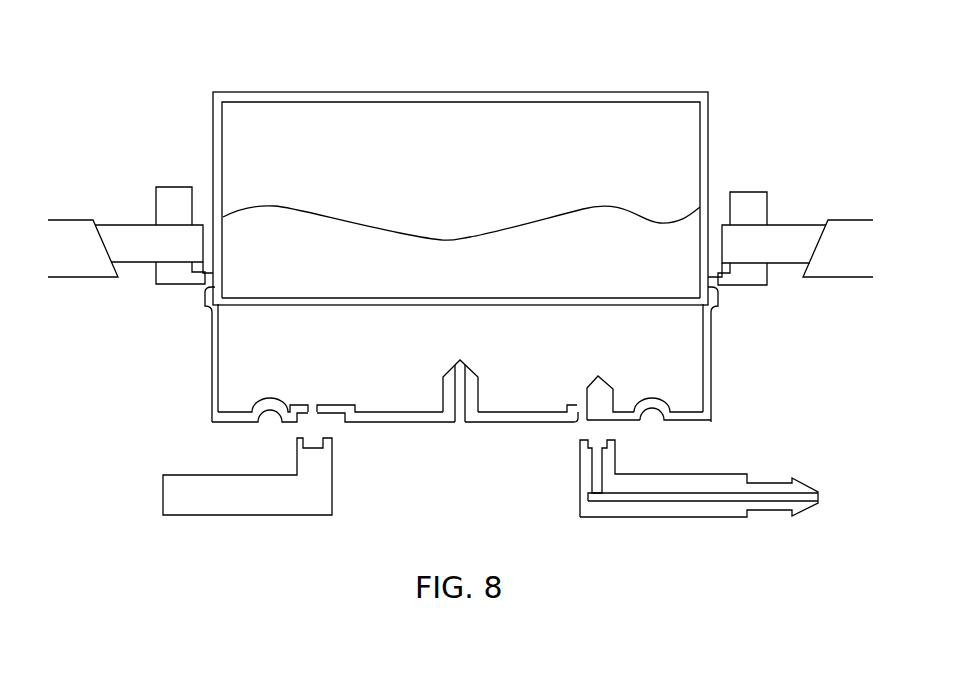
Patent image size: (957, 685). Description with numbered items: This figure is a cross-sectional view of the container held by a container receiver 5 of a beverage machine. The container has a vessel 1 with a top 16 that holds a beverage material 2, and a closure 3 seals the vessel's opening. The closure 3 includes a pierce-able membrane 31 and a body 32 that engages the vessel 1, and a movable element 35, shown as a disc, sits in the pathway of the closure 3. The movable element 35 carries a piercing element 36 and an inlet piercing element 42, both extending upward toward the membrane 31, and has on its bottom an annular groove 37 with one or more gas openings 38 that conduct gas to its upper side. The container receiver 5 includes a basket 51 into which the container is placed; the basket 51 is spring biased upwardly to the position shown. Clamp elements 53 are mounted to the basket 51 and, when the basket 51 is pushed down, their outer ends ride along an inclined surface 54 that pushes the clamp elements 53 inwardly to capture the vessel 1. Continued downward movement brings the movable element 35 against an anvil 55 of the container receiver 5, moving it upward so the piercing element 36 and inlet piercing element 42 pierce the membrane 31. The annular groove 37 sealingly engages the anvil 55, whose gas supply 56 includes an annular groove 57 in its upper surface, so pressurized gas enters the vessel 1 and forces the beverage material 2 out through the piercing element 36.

The vessel 1 is at (158, 84).
The beverage material 2 is at (677, 233).
The closure 3 is at (749, 374).
The container receiver 5 is at (109, 158).
The top 16 is at (488, 92).
The pierce-able membrane 31 is at (656, 302).
The body 32 is at (209, 395).
The movable element 35 is at (403, 423).
The piercing element 36 is at (477, 383).
The annular groove 37 is at (318, 422).
The gas openings 38 is at (303, 383).
The inlet piercing element 42 is at (596, 390).
The basket 51 is at (175, 203).
The clamp elements 53 is at (138, 263).
The inclined surface 54 is at (853, 253).
The anvil 55 is at (617, 467).
The gas supply 56 is at (772, 482).
The annular groove 57 is at (580, 426).